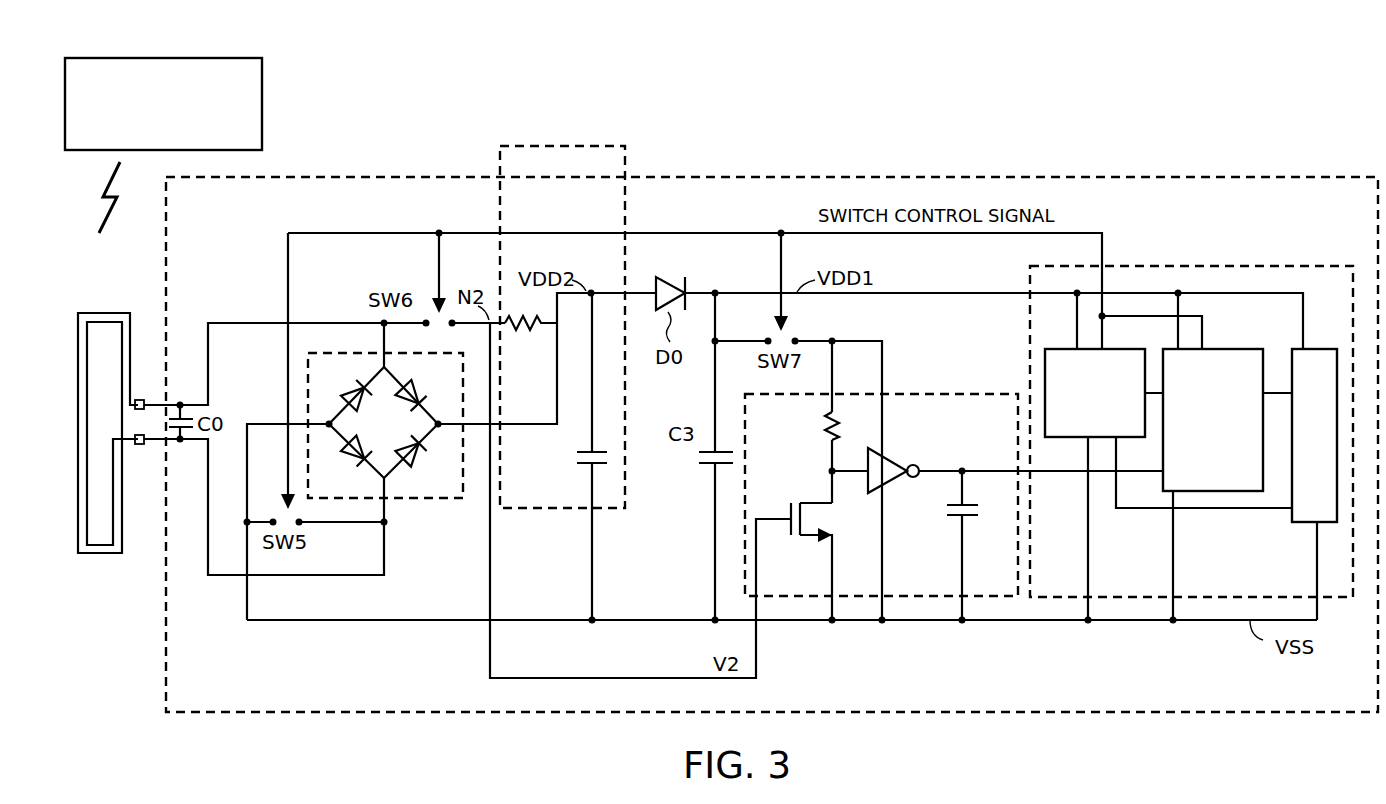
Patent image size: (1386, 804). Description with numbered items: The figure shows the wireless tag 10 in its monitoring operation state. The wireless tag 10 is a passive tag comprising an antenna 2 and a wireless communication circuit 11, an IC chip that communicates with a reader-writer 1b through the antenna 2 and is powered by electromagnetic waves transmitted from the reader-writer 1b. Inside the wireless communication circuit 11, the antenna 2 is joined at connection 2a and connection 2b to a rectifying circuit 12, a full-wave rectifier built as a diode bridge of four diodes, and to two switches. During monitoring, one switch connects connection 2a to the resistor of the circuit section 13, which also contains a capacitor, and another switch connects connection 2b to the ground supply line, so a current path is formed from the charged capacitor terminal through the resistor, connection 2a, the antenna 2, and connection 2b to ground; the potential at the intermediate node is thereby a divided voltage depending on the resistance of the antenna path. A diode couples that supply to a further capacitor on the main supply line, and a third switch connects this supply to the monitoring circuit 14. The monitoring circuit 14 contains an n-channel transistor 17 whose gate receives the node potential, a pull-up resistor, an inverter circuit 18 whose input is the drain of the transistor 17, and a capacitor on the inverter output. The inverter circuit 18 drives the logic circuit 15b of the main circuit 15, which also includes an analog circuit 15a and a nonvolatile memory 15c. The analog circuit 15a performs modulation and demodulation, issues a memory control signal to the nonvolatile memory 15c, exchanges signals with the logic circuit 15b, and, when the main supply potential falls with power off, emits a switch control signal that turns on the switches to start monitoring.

The reader-writer 1b is at (262, 107).
The antenna 2 is at (93, 312).
The connection 2a is at (146, 399).
The connection 2b is at (143, 445).
The wireless tag 10 is at (1321, 127).
The wireless communication circuit 11 is at (350, 177).
The rectifying circuit 12 is at (415, 500).
The circuit section 13 is at (583, 146).
The monitoring circuit 14 is at (954, 511).
The main circuit 15 is at (1191, 407).
The analog circuit 15a is at (1064, 348).
The logic circuit 15b is at (1213, 346).
The nonvolatile memory 15c is at (1327, 348).
The transistor 17 is at (815, 502).
The inverter circuit 18 is at (892, 483).